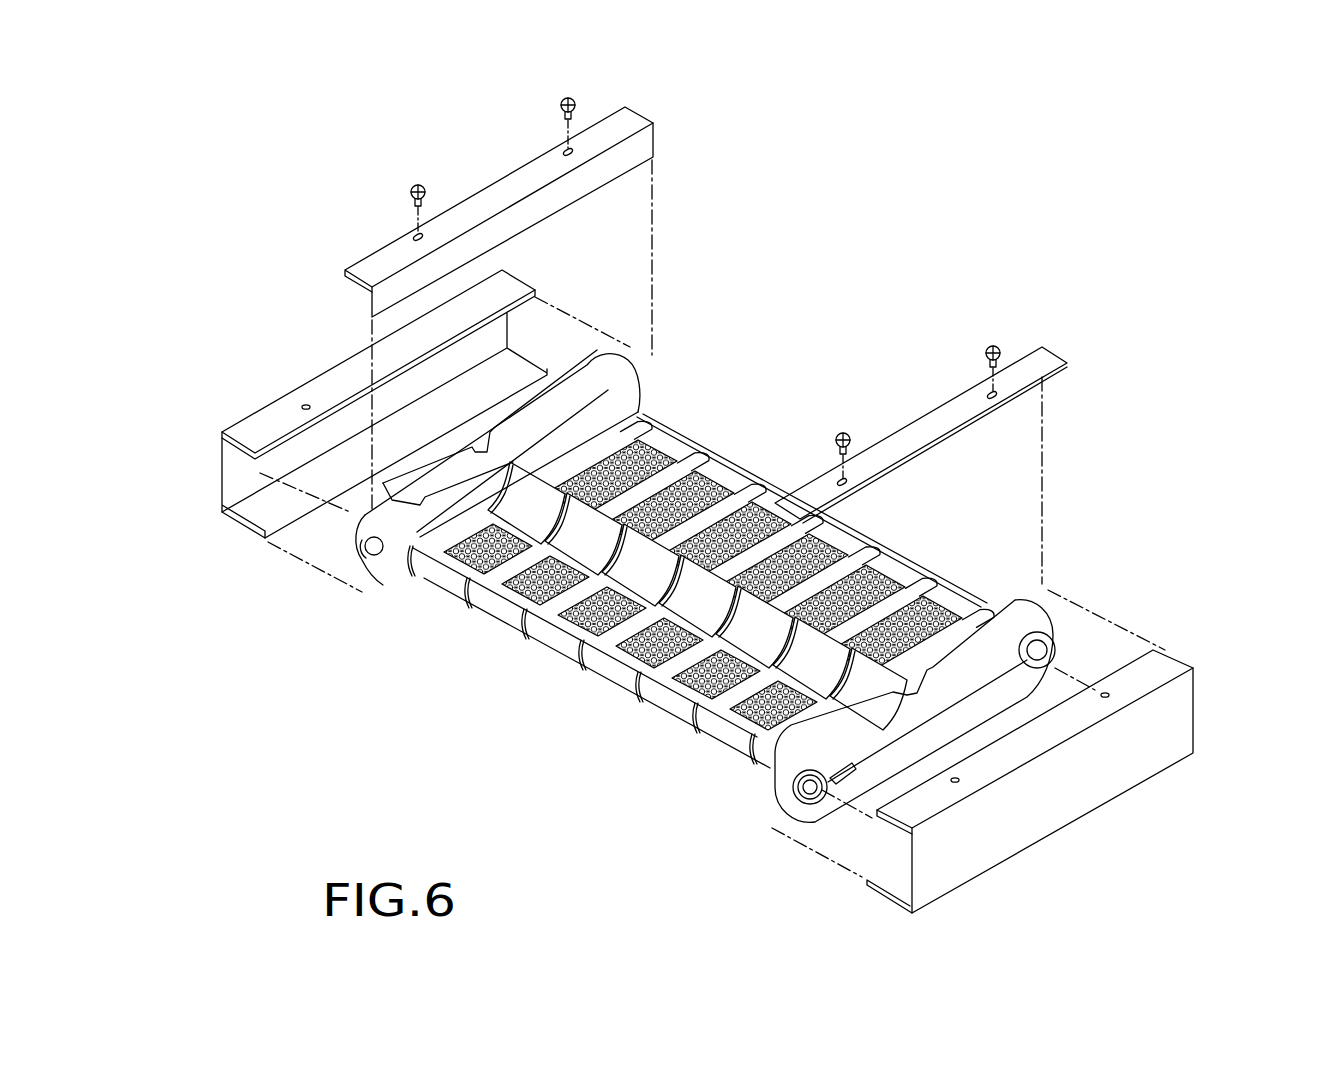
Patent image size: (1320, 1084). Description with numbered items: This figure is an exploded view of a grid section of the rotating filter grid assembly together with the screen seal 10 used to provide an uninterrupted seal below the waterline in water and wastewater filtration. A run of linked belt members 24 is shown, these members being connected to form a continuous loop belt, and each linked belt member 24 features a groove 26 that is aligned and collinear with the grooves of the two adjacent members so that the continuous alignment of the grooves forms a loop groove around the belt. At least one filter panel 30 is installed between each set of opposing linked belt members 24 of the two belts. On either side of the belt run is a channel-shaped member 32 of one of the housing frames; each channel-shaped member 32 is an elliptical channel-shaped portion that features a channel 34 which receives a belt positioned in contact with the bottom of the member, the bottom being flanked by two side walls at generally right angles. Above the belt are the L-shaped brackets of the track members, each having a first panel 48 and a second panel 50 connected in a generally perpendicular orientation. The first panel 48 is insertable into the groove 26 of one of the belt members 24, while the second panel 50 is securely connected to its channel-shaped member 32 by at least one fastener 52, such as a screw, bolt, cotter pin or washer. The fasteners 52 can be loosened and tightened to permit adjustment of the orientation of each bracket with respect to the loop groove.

The seal 10 is at (828, 240).
The linked belt member 24 is at (398, 590).
The groove 26 is at (363, 558).
The filter panel 30 is at (722, 470).
The channel-shaped member 32 is at (224, 520).
The channel 34 is at (238, 483).
The first panel 48 is at (643, 147).
The second panel 50 is at (630, 113).
The fastener 52 is at (410, 186).